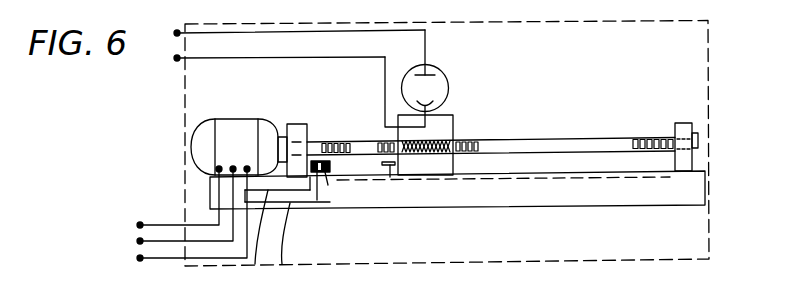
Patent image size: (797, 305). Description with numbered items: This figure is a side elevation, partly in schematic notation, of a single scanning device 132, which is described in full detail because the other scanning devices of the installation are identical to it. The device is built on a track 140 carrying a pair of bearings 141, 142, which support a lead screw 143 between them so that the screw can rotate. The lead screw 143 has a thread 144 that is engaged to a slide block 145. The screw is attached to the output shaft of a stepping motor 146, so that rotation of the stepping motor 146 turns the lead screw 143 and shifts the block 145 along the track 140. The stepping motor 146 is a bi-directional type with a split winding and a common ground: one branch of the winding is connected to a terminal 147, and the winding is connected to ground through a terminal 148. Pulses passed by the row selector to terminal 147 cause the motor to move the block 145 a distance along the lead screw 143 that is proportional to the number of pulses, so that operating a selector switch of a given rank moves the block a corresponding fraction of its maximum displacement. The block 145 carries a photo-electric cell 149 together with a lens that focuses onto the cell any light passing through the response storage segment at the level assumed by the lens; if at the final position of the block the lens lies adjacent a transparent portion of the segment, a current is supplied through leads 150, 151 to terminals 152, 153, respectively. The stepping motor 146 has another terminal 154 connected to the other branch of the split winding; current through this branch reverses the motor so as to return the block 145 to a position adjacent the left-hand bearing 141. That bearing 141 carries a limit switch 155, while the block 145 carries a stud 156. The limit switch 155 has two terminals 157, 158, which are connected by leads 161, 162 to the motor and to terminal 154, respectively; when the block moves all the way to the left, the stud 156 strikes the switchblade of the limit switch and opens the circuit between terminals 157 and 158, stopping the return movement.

The scanning device 132 is at (179, 118).
The track 140 is at (698, 184).
The bearing 141 is at (313, 100).
The bearing 142 is at (677, 123).
The lead screw 143 is at (602, 137).
The thread 144 is at (473, 139).
The slide block 145 is at (454, 115).
The stepping motor 146 is at (245, 146).
The terminal 147 is at (140, 225).
The terminal 148 is at (140, 241).
The photo-electric cell 149 is at (444, 69).
The lead 150 is at (384, 80).
The lead 151 is at (427, 46).
The terminal 152 is at (177, 59).
The terminal 153 is at (177, 32).
The terminal 154 is at (140, 258).
The limit switch 155 is at (328, 185).
The stud 156 is at (390, 177).
The terminal 157 is at (317, 200).
The terminal 158 is at (328, 166).
The lead 161 is at (258, 242).
The lead 162 is at (303, 245).